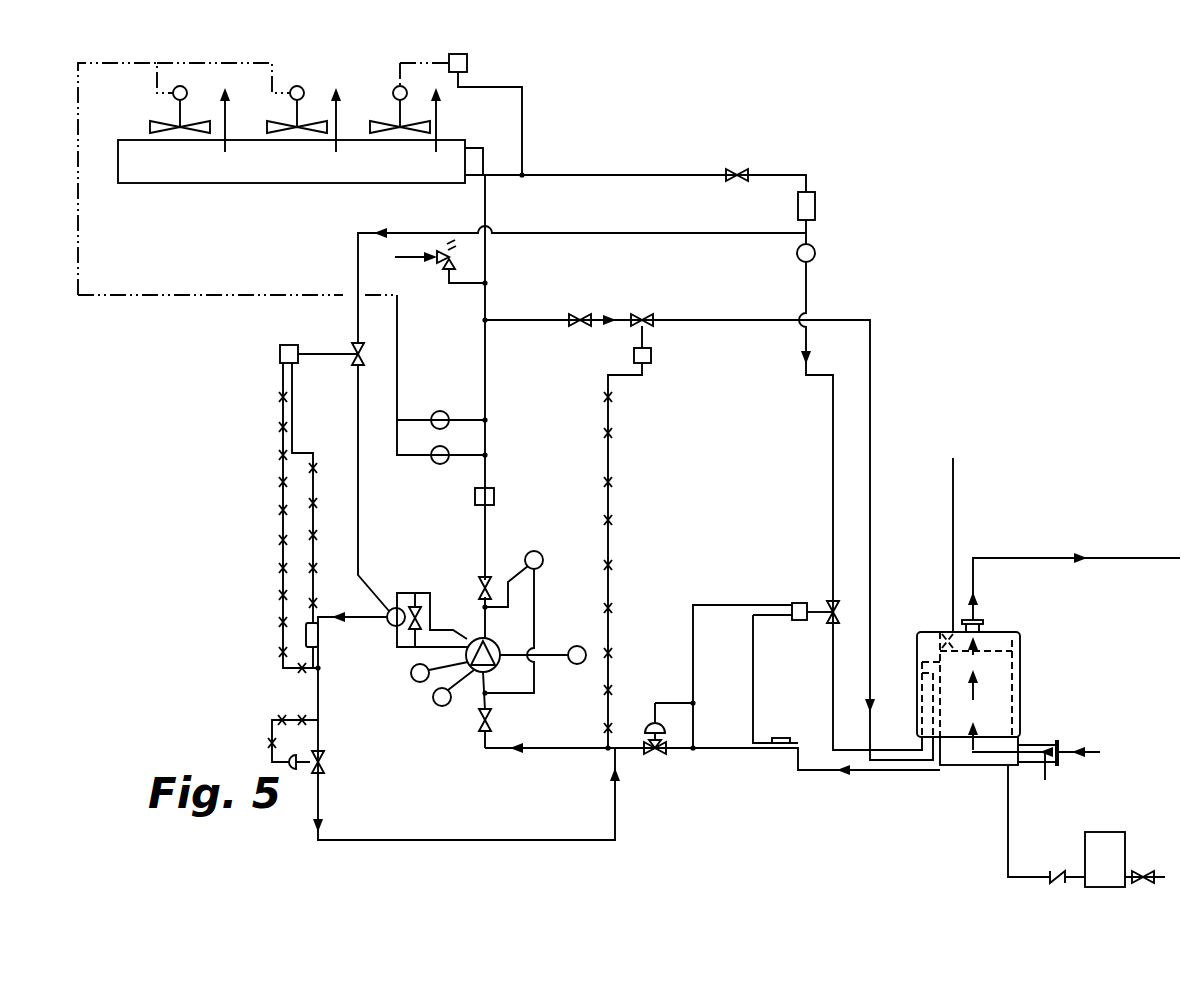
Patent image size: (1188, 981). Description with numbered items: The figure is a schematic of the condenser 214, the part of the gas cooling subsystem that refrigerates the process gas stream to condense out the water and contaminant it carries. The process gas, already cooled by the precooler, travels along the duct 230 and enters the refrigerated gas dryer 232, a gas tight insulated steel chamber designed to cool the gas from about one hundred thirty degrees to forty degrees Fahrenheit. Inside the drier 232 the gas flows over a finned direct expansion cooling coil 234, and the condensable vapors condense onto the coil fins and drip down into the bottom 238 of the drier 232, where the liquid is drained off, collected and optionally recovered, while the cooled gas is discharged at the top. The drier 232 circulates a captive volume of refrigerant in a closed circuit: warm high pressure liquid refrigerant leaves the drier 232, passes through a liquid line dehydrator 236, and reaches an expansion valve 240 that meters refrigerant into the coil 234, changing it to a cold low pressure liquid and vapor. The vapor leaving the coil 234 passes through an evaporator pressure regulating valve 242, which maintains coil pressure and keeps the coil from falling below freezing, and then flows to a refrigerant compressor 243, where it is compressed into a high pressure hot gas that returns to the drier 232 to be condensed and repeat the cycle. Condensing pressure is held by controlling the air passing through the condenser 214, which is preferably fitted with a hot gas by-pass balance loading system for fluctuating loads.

The condenser 214 is at (989, 222).
The duct 230 is at (1093, 753).
The refrigerated gas dryer 232 is at (1021, 637).
The finned direct expansion cooling coil 234 is at (1021, 672).
The liquid line dehydrator 236 is at (242, 178).
The bottom of the drier 238 is at (1007, 768).
The expansion valve 240 is at (800, 603).
The evaporator pressure regulating valve 242 is at (660, 758).
The refrigerant compressor 243 is at (489, 650).